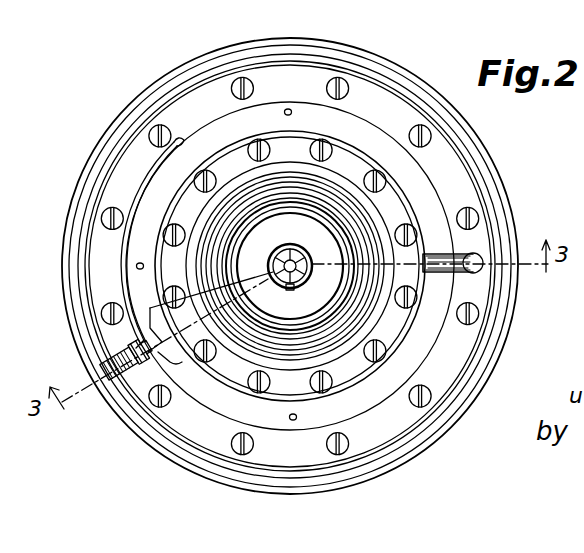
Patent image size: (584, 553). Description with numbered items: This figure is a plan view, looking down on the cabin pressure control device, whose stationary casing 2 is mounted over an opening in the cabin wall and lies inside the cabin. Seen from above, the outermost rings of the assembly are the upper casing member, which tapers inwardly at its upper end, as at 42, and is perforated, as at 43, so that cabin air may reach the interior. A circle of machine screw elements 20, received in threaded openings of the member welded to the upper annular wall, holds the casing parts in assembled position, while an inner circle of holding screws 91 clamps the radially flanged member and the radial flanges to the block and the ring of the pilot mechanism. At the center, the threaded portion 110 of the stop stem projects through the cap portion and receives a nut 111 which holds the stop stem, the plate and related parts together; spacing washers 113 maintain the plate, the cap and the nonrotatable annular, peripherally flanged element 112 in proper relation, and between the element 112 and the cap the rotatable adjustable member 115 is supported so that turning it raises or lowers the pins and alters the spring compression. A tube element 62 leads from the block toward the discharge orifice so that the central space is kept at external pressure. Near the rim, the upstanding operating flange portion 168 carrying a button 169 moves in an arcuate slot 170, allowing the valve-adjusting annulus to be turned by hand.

The casing 2 is at (433, 179).
The machine screw elements 20 is at (333, 80).
The inwardly tapering portion of upper casing member 42 is at (451, 152).
The perforations 43 is at (288, 108).
The tube element 62 is at (472, 276).
The holding screws 91 is at (378, 170).
The threaded portion 110 is at (310, 279).
The nut 111 is at (280, 281).
The annular peripherally flanged element 112 is at (314, 312).
The spacing washers 113 is at (298, 246).
The adjustable member 115 is at (222, 258).
The operating flange portion 168 is at (158, 354).
The button 169 is at (136, 372).
The arcuate slot 170 is at (138, 190).